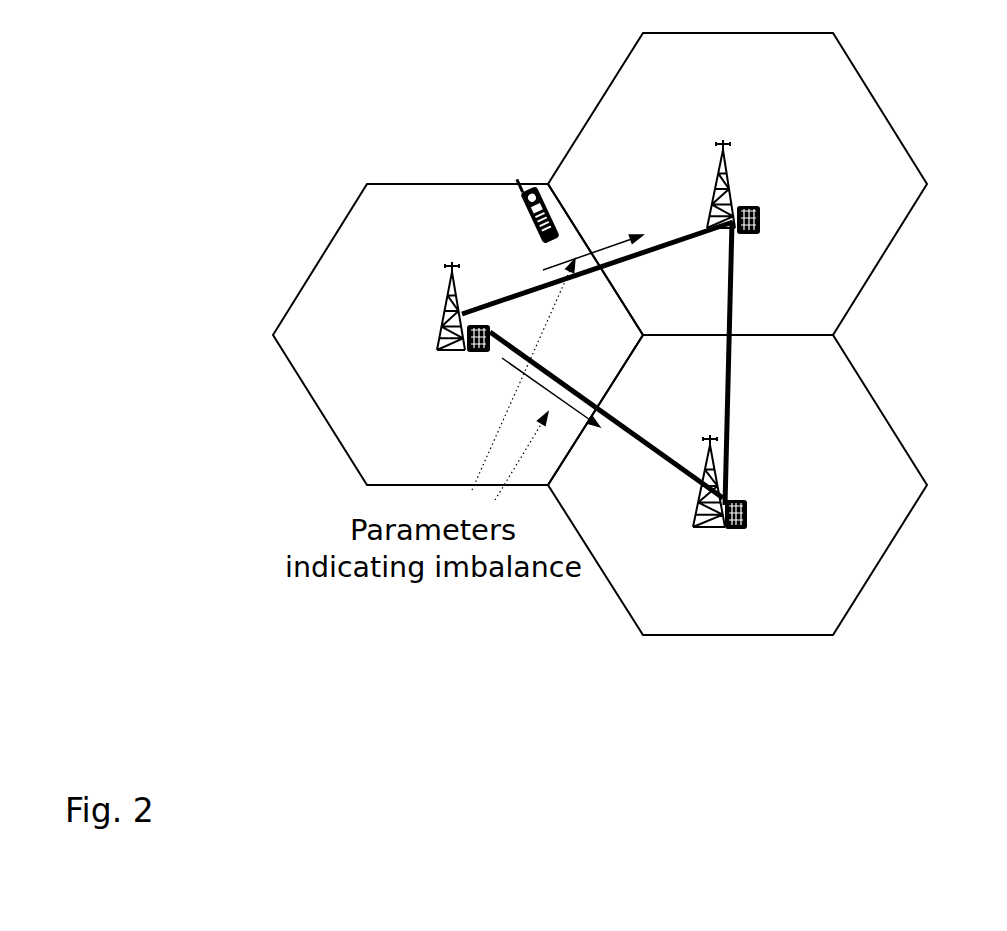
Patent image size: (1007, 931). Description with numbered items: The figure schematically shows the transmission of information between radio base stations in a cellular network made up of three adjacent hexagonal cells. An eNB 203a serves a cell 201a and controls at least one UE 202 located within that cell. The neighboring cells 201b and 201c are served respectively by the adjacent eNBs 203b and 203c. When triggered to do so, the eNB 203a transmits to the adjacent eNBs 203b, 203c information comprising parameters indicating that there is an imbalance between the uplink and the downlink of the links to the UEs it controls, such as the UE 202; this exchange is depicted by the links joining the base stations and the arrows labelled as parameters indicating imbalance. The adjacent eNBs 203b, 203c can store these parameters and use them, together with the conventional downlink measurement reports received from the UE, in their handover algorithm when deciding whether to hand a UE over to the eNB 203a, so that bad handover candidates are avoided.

The cell 201a is at (458, 334).
The cell 201b is at (737, 184).
The cell 201c is at (737, 485).
The UE 202 is at (535, 188).
The eNB 203a is at (427, 338).
The adjacent eNB 203b is at (788, 233).
The adjacent eNB 203c is at (748, 515).